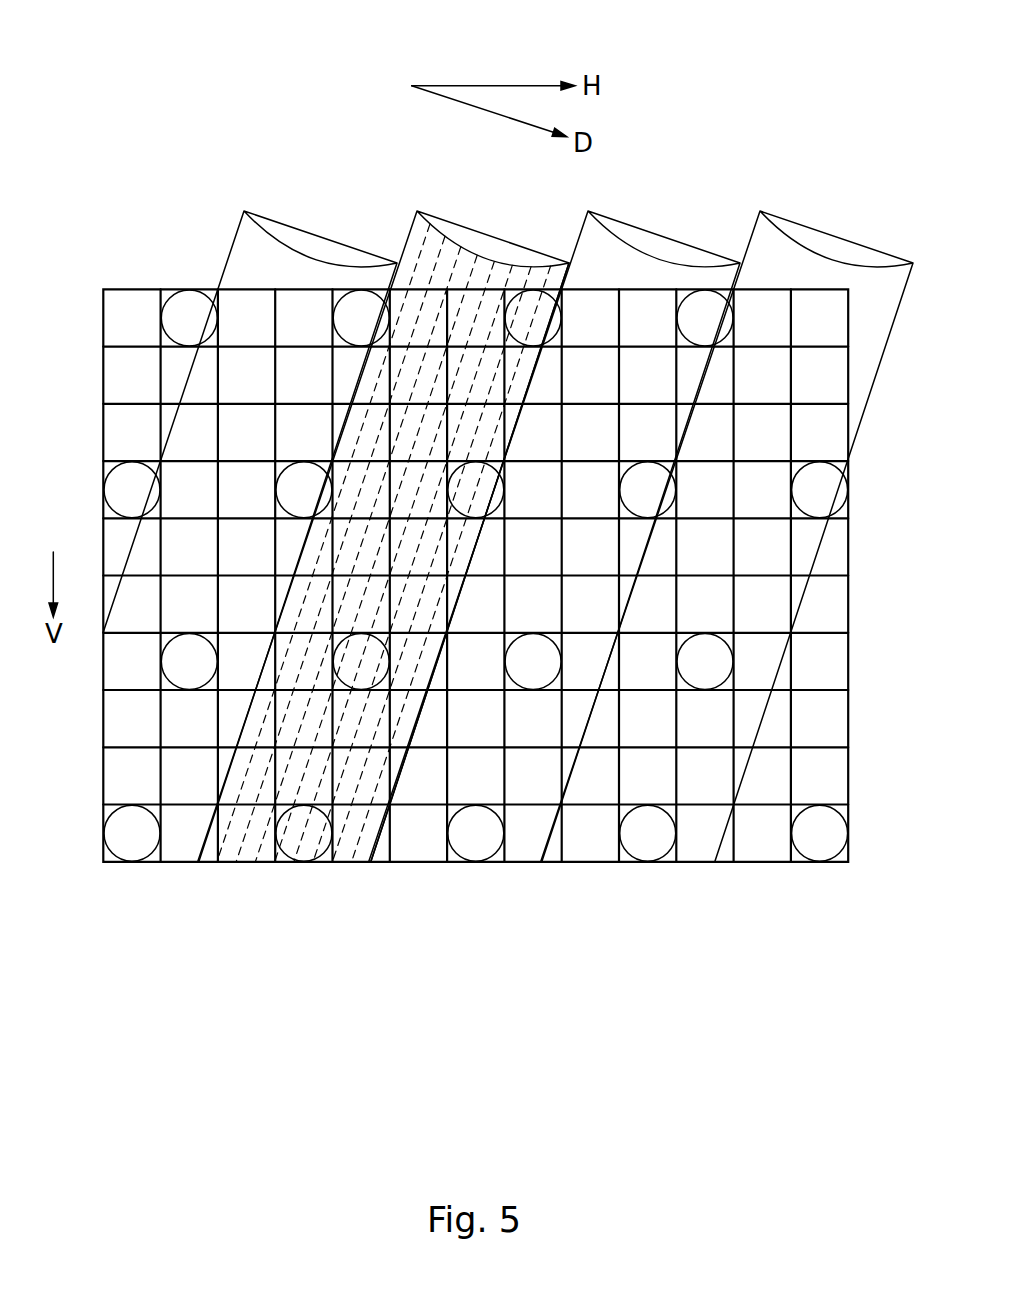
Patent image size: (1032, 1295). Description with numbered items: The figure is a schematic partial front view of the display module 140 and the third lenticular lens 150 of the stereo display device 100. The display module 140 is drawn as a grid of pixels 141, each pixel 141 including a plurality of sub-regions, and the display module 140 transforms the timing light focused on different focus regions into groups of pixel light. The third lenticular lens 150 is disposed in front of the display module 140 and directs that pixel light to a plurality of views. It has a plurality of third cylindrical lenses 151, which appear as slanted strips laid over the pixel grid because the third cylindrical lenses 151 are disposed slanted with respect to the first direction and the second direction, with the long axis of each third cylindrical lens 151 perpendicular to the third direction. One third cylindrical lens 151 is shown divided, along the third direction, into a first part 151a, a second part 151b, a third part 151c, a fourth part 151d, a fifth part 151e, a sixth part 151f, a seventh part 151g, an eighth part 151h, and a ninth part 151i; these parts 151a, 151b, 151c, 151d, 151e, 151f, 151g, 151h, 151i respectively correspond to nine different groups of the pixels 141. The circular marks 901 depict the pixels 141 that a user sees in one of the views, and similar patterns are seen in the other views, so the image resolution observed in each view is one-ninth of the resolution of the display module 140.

The stereo display device 100 is at (150, 36).
The display module 140 is at (103, 300).
The pixels 141 is at (115, 333).
The marks 901 is at (105, 486).
The third lenticular lens 150 is at (232, 250).
The third cylindrical lenses 151 is at (313, 617).
The first part 151a is at (207, 862).
The second part 151b is at (225, 862).
The third part 151c is at (245, 862).
The fourth part 151d is at (270, 862).
The fifth part 151e is at (283, 862).
The sixth part 151f is at (298, 862).
The seventh part 151g is at (320, 862).
The eighth part 151h is at (340, 862).
The ninth part 151i is at (463, 606).